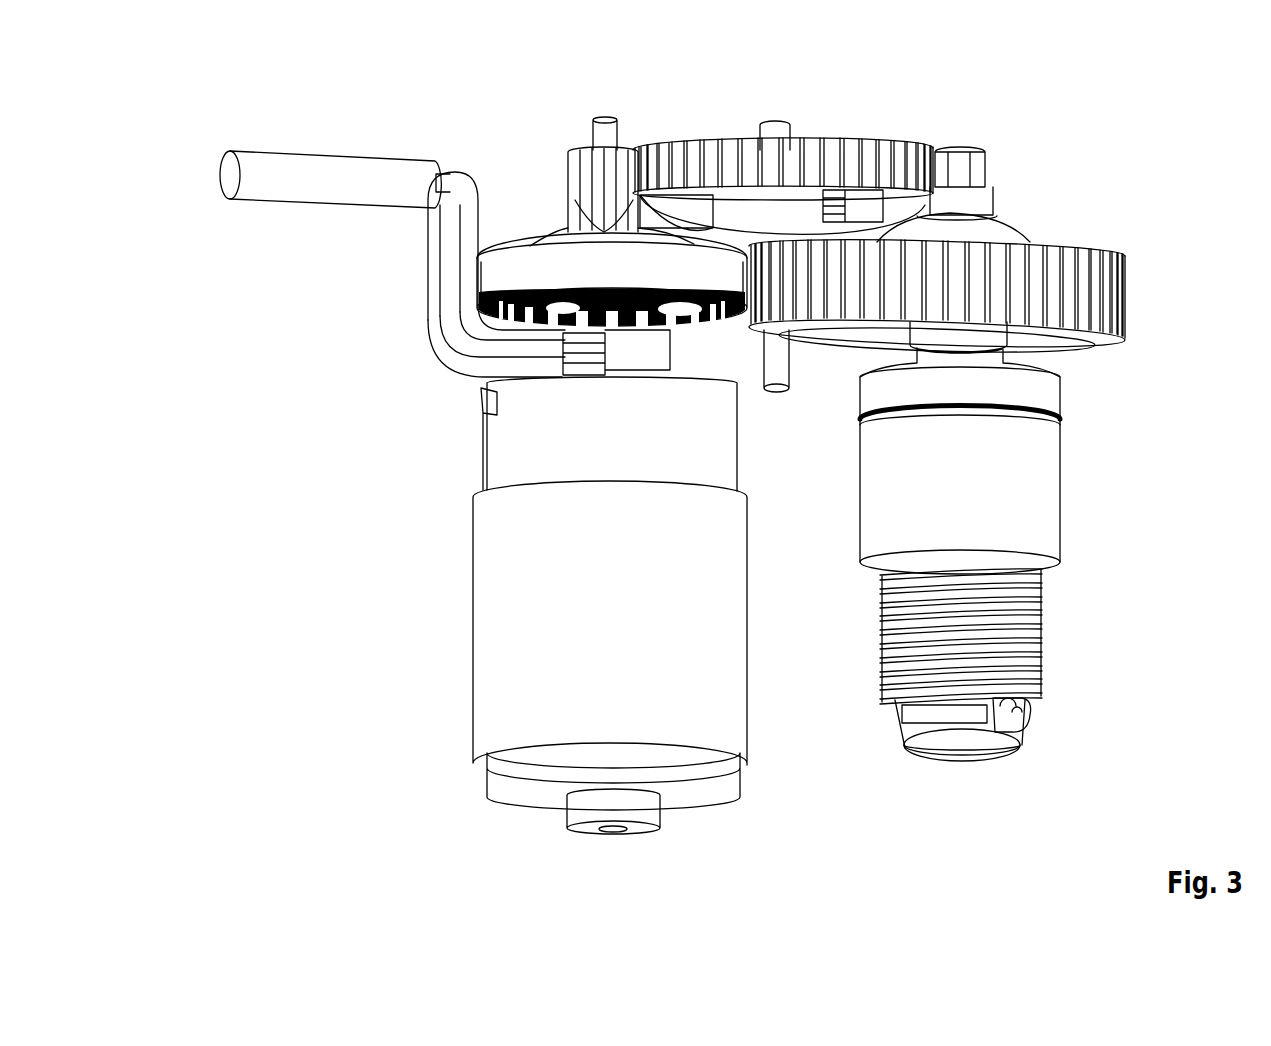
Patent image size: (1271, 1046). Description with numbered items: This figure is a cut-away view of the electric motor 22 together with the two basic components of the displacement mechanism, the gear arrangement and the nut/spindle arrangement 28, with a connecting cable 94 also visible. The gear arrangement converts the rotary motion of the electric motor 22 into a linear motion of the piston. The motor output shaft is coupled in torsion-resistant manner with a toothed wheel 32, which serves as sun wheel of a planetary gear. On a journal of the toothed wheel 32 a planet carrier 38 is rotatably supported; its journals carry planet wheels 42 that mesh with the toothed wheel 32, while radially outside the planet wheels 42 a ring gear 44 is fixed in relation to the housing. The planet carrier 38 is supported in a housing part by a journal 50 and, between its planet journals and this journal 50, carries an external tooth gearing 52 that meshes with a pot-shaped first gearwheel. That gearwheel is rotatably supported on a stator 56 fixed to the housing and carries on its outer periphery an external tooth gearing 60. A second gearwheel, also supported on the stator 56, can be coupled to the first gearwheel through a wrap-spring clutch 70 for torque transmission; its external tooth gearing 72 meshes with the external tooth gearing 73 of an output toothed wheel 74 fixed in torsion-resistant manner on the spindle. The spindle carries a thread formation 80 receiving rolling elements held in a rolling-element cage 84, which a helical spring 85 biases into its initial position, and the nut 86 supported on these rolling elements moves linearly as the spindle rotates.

The connecting cable 94 is at (310, 187).
The planet wheels 42 is at (500, 307).
The ring gear 44 is at (525, 258).
The planet carrier 38 is at (558, 240).
The external tooth gearing 52 is at (587, 147).
The journal 50 is at (607, 120).
The stator 56 is at (770, 123).
The external tooth gearing 60 is at (873, 147).
The output toothed wheel 74 is at (1053, 243).
The external tooth gearing 73 is at (1127, 278).
The external tooth gearing 72 is at (797, 400).
The electric motor 22 is at (507, 573).
The toothed wheel 32 is at (482, 441).
The nut/spindle arrangement 28 is at (1070, 508).
The nut 86 is at (1060, 447).
The helical spring 85 is at (1043, 647).
The rolling-element cage 84 is at (898, 736).
The thread formation 80 is at (1020, 748).
The wrap-spring clutch 70 is at (953, 762).